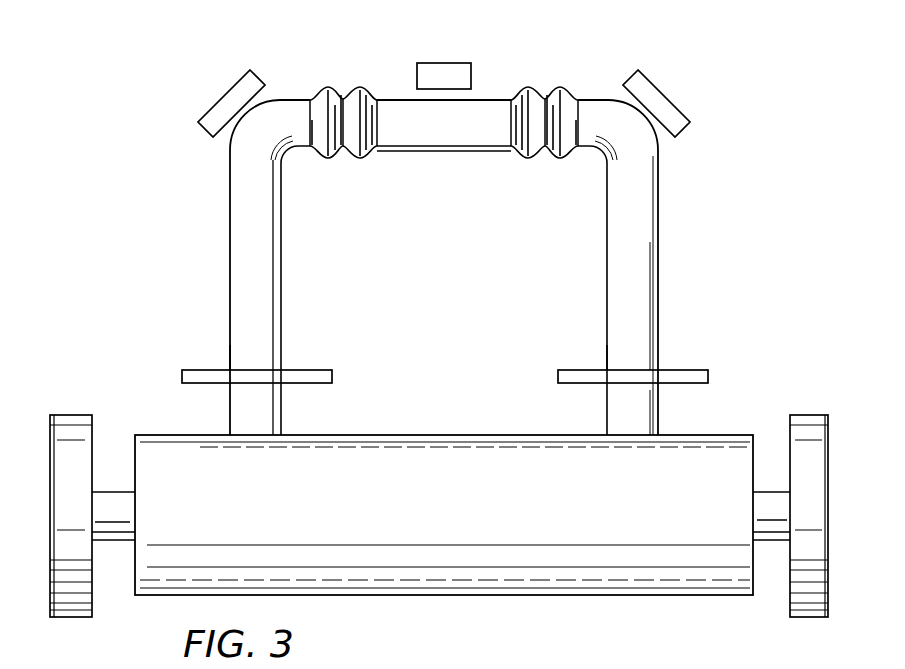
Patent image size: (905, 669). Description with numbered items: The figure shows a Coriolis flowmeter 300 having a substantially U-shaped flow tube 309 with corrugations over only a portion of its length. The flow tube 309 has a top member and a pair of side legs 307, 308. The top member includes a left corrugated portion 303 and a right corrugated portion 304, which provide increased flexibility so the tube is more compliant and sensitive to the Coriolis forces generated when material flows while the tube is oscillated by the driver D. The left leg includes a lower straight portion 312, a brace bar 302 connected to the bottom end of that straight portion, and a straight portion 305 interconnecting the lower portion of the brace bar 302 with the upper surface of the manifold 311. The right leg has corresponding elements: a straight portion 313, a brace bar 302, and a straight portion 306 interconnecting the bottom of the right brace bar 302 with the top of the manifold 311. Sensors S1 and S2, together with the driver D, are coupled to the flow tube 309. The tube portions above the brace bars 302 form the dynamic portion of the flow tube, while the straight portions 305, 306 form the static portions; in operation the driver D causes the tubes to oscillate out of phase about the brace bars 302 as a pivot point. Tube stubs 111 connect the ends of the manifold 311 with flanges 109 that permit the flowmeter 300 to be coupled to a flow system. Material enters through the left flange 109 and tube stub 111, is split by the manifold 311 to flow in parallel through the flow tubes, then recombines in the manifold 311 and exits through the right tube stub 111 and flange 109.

The Coriolis flowmeter 300 is at (139, 97).
The flow tube 309 is at (465, 225).
The side leg 307 is at (258, 250).
The side leg 308 is at (647, 275).
The straight portion 305 is at (275, 413).
The straight portion 306 is at (615, 415).
The left corrugated portion 303 is at (358, 162).
The right corrugated portion 304 is at (551, 163).
The brace bar 302 is at (315, 372).
The lower straight portion 312 is at (240, 358).
The straight portion 313 is at (608, 358).
The manifold 311 is at (482, 520).
The flange 109 is at (82, 422).
The tube stub 111 is at (125, 537).
The driver D is at (458, 82).
The sensor S1 is at (213, 118).
The sensor S2 is at (665, 112).